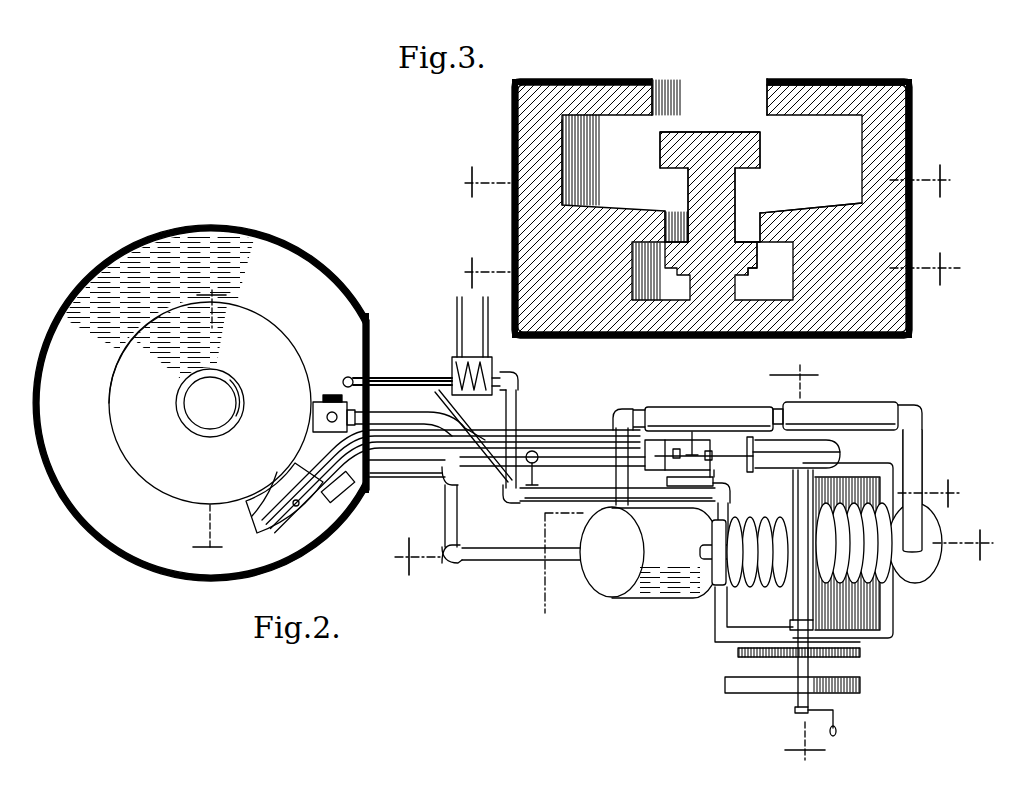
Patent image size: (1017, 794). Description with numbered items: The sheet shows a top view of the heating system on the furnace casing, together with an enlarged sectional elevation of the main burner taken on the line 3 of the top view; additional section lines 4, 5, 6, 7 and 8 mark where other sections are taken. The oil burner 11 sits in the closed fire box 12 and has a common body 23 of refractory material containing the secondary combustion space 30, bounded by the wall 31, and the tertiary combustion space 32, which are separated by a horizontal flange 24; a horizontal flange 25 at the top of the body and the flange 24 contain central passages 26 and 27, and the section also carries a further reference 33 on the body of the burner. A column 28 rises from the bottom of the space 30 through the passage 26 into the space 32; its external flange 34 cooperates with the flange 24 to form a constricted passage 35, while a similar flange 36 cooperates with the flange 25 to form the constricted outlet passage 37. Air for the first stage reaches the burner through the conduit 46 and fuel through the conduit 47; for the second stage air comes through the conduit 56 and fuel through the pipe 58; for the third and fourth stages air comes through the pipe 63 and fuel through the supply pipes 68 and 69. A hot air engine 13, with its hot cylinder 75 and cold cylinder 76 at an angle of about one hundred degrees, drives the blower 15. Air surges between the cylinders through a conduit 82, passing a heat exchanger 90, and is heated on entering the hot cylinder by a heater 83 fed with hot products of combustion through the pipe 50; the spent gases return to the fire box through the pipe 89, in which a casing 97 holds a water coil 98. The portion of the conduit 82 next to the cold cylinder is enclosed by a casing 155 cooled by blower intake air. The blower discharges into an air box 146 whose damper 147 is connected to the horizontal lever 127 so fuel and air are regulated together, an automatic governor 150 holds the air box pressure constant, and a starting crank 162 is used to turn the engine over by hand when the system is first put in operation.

In FIG. 2, the section line 3— 3 is at (115, 495).
In FIG. 3, the section line 4- 4 is at (712, 270).
In FIG. 3, the section line 5- 5 is at (707, 181).
In FIG. 2, the section line 6- 6 is at (797, 563).
In FIG. 2, the section line 7- 7 is at (752, 549).
In FIG. 2, the section line 8- 8 is at (694, 552).
In FIG. 2, the oil burner 11 is at (262, 316).
In FIG. 2, the fire box 12 is at (332, 270).
In FIG. 2, the hot air engine 13 is at (705, 632).
In FIG. 2, the blower 15 is at (813, 445).
In FIG. 3, the body 23 is at (888, 243).
In FIG. 2, the body 23 is at (108, 403).
In FIG. 3, the horizontal flange 24 is at (773, 223).
In FIG. 3, the horizontal flange 25 is at (812, 90).
In FIG. 2, the horizontal flange 25 is at (202, 473).
In FIG. 3, the central passage 26 is at (747, 223).
In FIG. 3, the central passage 27 is at (737, 92).
In FIG. 2, the central passage 27 is at (233, 426).
In FIG. 3, the column 28 is at (692, 192).
In FIG. 3, the secondary combustion space 30 is at (764, 271).
In FIG. 3, the wall 31 is at (634, 284).
In FIG. 3, the tertiary combustion space 32 is at (712, 178).
In FIG. 3, the wall 33 is at (567, 182).
In FIG. 3, the external flange 34 is at (757, 257).
In FIG. 3, the constricted passage 35 is at (682, 210).
In FIG. 3, the flange 36 is at (672, 157).
In FIG. 2, the flange 36 is at (213, 386).
In FIG. 3, the constricted outlet passage 37 is at (660, 122).
In FIG. 2, the conduit 46 is at (410, 413).
In FIG. 2, the conduit 47 is at (457, 405).
In FIG. 2, the pipe 50 is at (335, 496).
In FIG. 2, the conduit 56 is at (300, 508).
In FIG. 2, the pipe 58 is at (413, 463).
In FIG. 2, the pipe 63 is at (293, 518).
In FIG. 2, the supply pipe 68 is at (380, 432).
In FIG. 2, the supply pipe 69 is at (398, 438).
In FIG. 2, the hot cylinder 75 is at (750, 589).
In FIG. 2, the cold cylinder 76 is at (866, 584).
In FIG. 2, the conduit 82 is at (627, 410).
In FIG. 2, the heater 83 is at (610, 598).
In FIG. 2, the pipe 89 is at (517, 397).
In FIG. 2, the heat exchanger 90 is at (688, 405).
In FIG. 2, the casing 97 is at (495, 364).
In FIG. 2, the coil 98 is at (515, 382).
In FIG. 2, the horizontal lever 127 is at (728, 455).
In FIG. 2, the air box 146 is at (703, 444).
In FIG. 2, the damper 147 is at (657, 445).
In FIG. 2, the automatic governor 150 is at (538, 446).
In FIG. 2, the casing 155 is at (852, 403).
In FIG. 2, the starting crank 162 is at (795, 710).